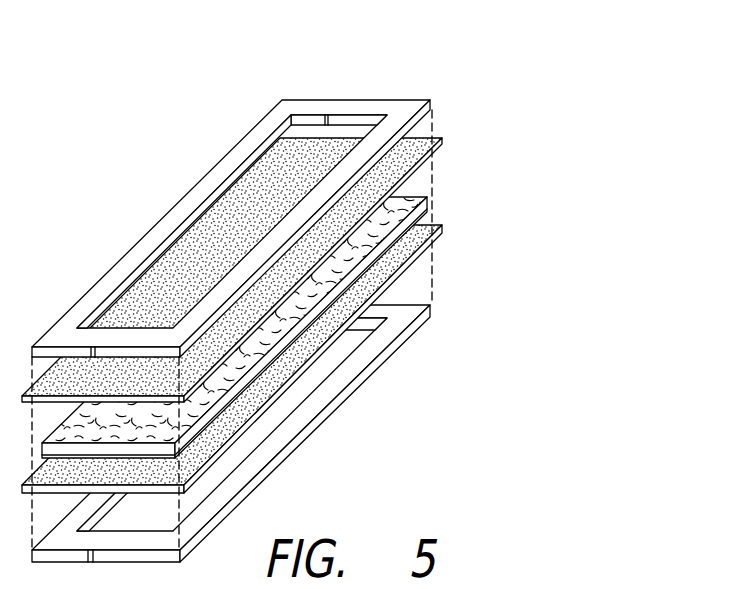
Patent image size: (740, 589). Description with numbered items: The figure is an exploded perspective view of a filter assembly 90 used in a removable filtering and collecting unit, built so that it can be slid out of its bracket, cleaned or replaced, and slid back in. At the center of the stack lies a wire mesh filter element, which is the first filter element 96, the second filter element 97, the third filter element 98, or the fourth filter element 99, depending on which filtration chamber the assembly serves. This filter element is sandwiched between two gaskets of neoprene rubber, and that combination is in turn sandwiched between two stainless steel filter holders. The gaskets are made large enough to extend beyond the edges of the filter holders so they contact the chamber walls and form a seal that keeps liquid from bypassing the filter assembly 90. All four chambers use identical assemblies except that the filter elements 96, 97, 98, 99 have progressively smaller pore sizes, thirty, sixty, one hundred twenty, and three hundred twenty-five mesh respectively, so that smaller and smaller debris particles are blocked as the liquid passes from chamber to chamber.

The filter assembly 90 is at (118, 224).
The first filter element 96 is at (371, 297).
The second filter element 97 is at (371, 297).
The third filter element 98 is at (371, 297).
The fourth filter element 99 is at (427, 198).